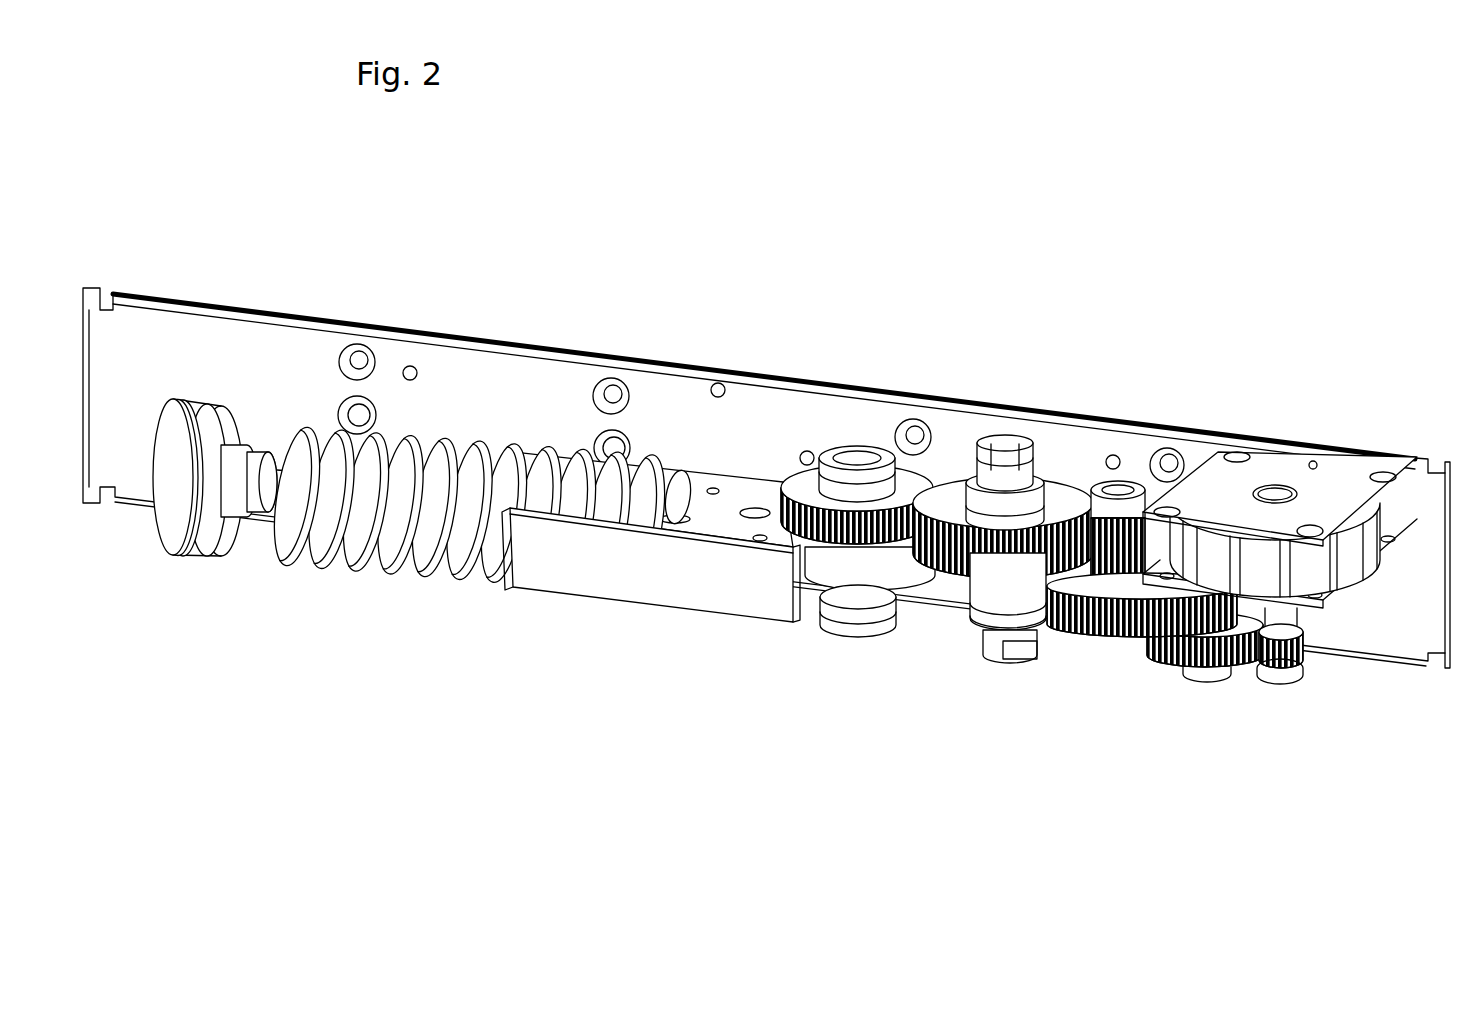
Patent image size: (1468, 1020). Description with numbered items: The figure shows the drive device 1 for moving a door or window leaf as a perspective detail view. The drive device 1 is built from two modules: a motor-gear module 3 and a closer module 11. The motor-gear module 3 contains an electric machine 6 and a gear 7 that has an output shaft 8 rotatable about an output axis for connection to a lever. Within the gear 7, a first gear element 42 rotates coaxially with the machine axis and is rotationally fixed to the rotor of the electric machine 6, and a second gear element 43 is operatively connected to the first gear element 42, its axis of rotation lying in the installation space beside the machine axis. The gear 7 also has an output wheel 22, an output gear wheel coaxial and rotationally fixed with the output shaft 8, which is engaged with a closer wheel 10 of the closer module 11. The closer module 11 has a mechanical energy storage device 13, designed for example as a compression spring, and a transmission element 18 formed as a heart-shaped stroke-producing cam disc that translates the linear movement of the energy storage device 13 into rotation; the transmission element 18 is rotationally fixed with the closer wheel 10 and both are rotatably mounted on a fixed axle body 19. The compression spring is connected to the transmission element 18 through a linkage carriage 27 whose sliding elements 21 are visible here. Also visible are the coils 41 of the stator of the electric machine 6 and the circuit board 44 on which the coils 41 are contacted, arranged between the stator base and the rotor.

The drive device 1 is at (948, 302).
The motor-gear module 3 is at (1109, 529).
The electric machine 6 is at (1283, 558).
The gear 7 is at (1167, 678).
The output shaft 8 is at (1015, 643).
The closer wheel 10 is at (803, 497).
The closer module 11 is at (401, 571).
The mechanical energy storage device 13 is at (388, 563).
The transmission element 18 is at (908, 610).
The axle body 19 is at (850, 607).
The sliding elements 21 is at (633, 572).
The output wheel 22 is at (1078, 505).
The linkage carriage 27 is at (715, 511).
The coil 41 is at (1363, 578).
The first gear element 42 is at (1279, 680).
The second gear element 43 is at (1197, 680).
The circuit board 44 is at (1155, 678).